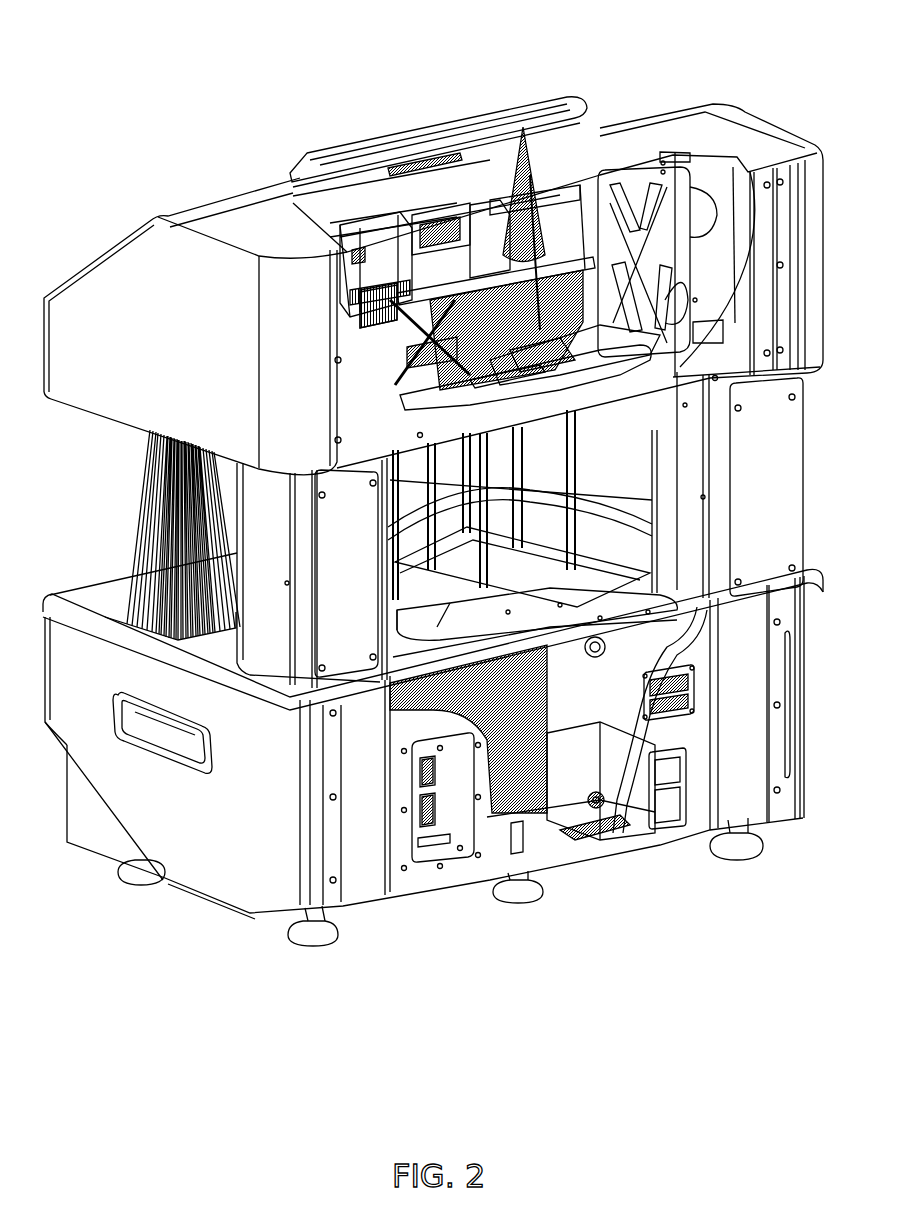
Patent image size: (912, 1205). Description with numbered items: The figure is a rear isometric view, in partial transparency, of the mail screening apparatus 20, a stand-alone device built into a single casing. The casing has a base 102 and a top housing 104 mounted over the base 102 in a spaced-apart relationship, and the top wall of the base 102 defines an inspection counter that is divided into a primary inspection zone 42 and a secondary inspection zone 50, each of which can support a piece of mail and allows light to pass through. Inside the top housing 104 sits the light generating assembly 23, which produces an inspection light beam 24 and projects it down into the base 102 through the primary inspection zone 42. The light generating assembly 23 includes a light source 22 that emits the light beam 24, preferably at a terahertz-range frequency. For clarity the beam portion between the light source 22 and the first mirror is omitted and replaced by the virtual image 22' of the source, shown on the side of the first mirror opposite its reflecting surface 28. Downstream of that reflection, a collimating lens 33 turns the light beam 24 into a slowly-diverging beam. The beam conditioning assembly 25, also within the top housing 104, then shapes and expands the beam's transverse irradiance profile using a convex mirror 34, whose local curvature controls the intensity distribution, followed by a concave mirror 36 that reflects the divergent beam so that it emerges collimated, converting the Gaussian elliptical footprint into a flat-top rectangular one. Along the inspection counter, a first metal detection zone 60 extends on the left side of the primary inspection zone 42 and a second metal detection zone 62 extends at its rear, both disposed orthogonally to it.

The mail screening apparatus 20 is at (95, 56).
The light generating assembly 23 is at (588, 33).
The light source 22 is at (376, 208).
The virtual image of the source 22' is at (537, 162).
The reflecting surface 28 is at (484, 205).
The collimating lens 33 is at (453, 213).
The inspection light beam 24 is at (572, 230).
The concave mirror 36 is at (605, 172).
The top housing 104 is at (203, 352).
The secondary inspection zone 50 is at (115, 600).
The beam conditioning assembly 25 is at (552, 383).
The convex mirror 34 is at (583, 396).
The first metal detection zone 60 is at (628, 546).
The primary inspection zone 42 is at (522, 578).
The second metal detection zone 62 is at (549, 622).
The base 102 is at (214, 851).